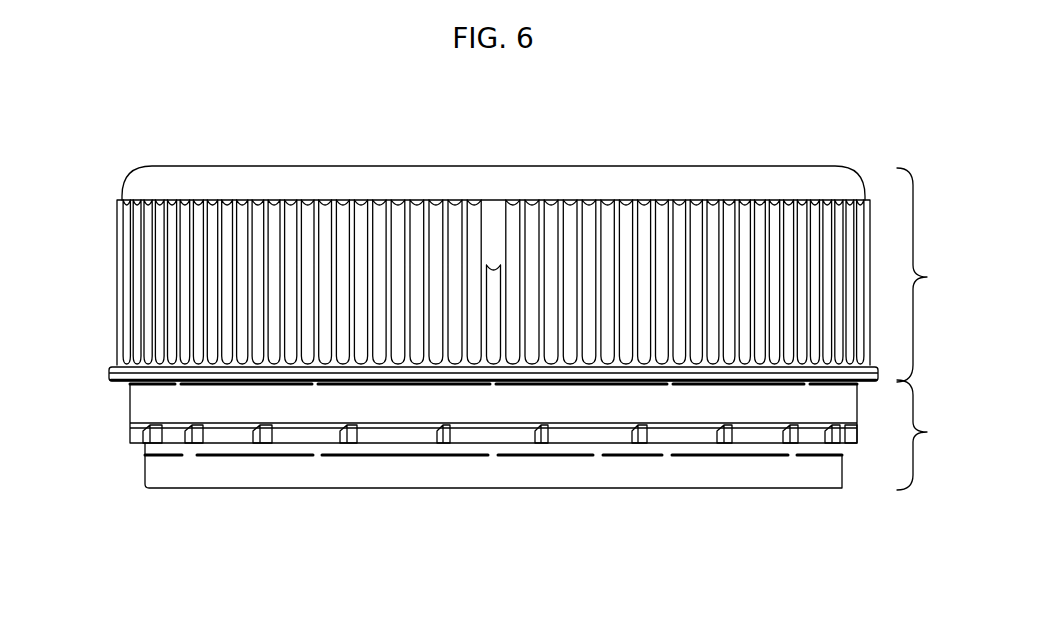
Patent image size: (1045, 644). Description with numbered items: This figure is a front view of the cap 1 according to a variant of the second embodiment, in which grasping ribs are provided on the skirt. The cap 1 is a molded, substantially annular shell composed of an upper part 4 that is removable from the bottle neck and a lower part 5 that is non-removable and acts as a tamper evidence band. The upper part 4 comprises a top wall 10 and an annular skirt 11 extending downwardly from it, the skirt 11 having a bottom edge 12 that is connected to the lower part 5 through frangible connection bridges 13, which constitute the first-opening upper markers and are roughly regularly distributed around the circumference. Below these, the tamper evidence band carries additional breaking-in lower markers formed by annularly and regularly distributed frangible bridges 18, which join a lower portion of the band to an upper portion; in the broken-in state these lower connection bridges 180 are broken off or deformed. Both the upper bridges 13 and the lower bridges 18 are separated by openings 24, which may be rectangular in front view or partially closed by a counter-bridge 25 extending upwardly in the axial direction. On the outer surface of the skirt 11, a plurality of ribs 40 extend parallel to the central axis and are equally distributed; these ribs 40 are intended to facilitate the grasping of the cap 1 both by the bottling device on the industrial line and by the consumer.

The cap 1 is at (702, 124).
The upper part 4 is at (488, 248).
The lower part 5 is at (498, 354).
The top wall 10 is at (418, 168).
The annular skirt 11 is at (117, 260).
The bottom edge 12 is at (112, 378).
The frangible connection bridges 13 is at (492, 385).
The bridges 18 is at (193, 456).
The openings 24 is at (229, 456).
The counter-bridge 25 is at (220, 383).
The ribs 40 is at (327, 207).
The connection bridges 180 is at (265, 440).